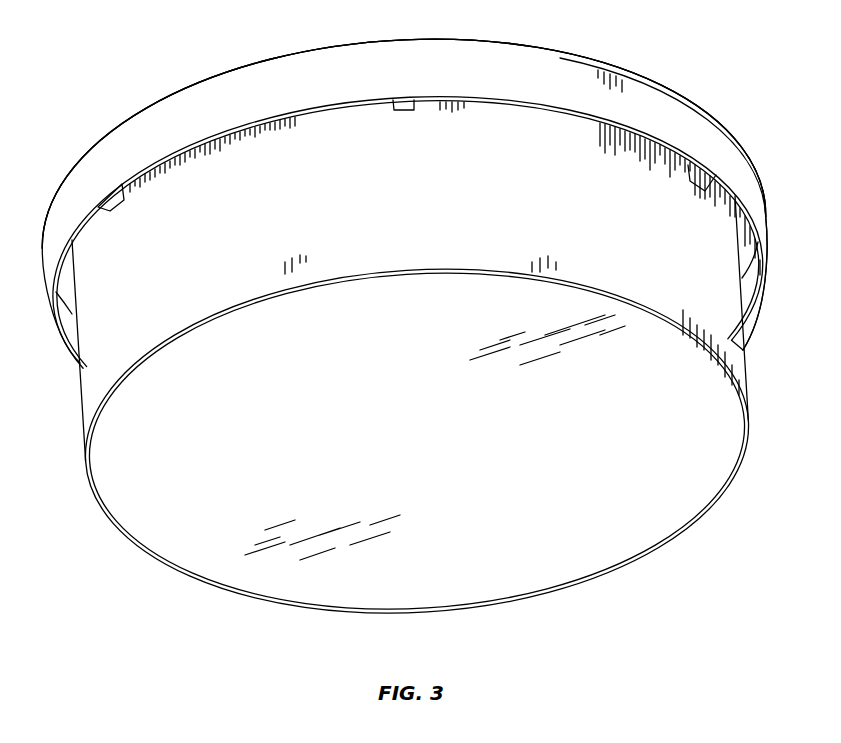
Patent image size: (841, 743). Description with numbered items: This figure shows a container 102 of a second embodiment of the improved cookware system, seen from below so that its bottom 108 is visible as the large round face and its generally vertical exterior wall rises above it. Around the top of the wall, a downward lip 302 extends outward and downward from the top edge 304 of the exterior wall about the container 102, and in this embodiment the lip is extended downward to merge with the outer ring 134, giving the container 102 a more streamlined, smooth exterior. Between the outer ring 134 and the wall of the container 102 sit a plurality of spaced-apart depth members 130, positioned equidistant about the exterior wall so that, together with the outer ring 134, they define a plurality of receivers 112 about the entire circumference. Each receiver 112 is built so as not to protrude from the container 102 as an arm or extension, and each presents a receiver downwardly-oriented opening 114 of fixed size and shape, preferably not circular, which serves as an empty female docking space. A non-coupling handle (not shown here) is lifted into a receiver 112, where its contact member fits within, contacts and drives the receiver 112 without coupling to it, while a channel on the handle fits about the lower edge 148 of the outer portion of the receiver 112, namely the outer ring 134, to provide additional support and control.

The container 102 is at (132, 543).
The bottom 108 is at (643, 518).
The receiver 112 is at (354, 50).
The receiver downwardly-oriented opening 114 is at (748, 280).
The depth member 130 is at (405, 111).
The outer ring 134 is at (495, 58).
The lower edge 148 is at (250, 127).
The downward lip 302 is at (613, 100).
The top edge 304 is at (240, 66).